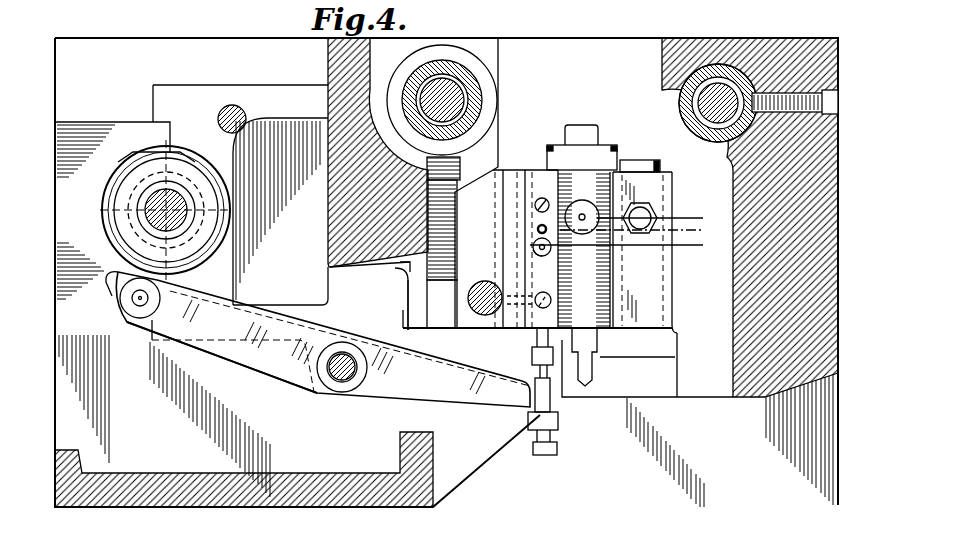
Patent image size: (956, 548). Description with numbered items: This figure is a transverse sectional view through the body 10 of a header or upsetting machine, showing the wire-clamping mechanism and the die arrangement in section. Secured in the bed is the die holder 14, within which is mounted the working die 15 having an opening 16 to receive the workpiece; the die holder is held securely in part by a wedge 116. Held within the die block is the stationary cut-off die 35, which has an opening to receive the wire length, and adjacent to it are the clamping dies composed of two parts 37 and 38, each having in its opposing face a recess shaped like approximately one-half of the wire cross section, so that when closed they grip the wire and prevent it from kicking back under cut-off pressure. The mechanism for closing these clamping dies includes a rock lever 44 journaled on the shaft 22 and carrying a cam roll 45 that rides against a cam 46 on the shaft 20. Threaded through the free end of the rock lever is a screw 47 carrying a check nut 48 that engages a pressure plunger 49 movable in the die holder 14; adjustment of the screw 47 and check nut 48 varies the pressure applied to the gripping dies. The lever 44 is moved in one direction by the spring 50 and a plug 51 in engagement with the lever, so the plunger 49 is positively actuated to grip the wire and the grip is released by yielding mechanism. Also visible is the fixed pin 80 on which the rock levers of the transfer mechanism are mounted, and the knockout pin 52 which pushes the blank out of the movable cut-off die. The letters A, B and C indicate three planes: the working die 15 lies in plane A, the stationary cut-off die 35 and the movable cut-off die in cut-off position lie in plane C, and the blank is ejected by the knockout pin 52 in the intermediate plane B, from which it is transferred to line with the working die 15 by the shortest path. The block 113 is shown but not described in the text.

The body 10 is at (121, 40).
The fixed pin 80 is at (235, 104).
The shaft 20 is at (142, 210).
The cam 46 is at (104, 232).
The cam roll 45 is at (108, 284).
The rock lever 44 is at (294, 368).
The shaft 22 is at (343, 355).
The spring 50 is at (407, 274).
The plug 51 is at (416, 327).
The block 113 is at (530, 170).
The working die 15 is at (580, 210).
The opening 16 is at (585, 212).
The die holder 14 is at (603, 172).
The wedge 116 is at (650, 189).
The knockout pin 52 is at (538, 228).
The stationary cut-off die 35 is at (535, 244).
The clamping die part 37 is at (533, 243).
The clamping die part 38 is at (535, 251).
The pressure plunger 49 is at (531, 356).
The check nut 48 is at (560, 420).
The screw 47 is at (559, 440).
The plane A is at (657, 219).
The plane B is at (638, 234).
The plane C is at (623, 249).